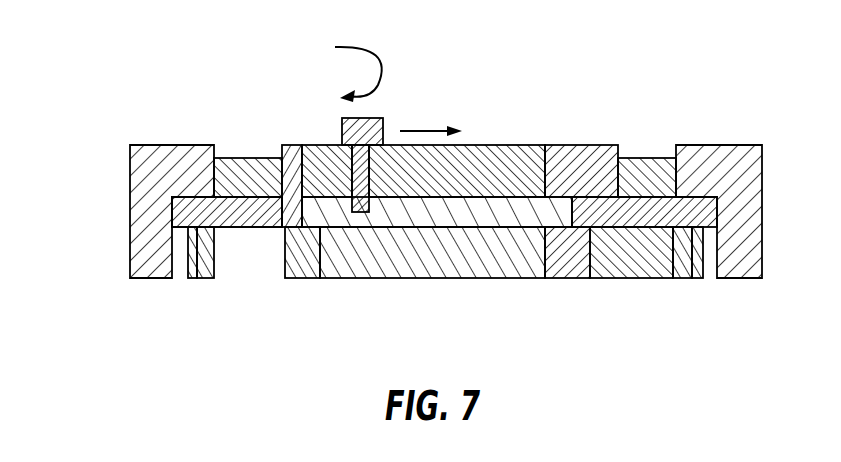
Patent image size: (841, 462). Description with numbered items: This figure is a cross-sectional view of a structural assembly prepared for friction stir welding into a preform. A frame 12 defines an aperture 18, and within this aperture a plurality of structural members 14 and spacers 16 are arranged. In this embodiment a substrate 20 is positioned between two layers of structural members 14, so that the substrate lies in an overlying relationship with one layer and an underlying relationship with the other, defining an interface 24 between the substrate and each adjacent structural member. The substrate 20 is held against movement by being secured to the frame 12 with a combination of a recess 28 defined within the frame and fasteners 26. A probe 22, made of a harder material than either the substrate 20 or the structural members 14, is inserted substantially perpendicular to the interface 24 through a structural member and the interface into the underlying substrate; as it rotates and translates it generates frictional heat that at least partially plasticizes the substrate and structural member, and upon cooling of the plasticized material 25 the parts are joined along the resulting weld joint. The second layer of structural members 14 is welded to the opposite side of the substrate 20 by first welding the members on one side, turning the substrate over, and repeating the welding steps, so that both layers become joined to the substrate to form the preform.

The frame 12 is at (128, 167).
The structural members 14 is at (483, 160).
The spacers 16 is at (242, 175).
The aperture 18 is at (242, 218).
The substrate 20 is at (190, 205).
The probe 22 is at (382, 120).
The interface 24 is at (505, 172).
The plasticized material 25 is at (319, 145).
The fasteners 26 is at (696, 262).
The recess 28 is at (187, 268).